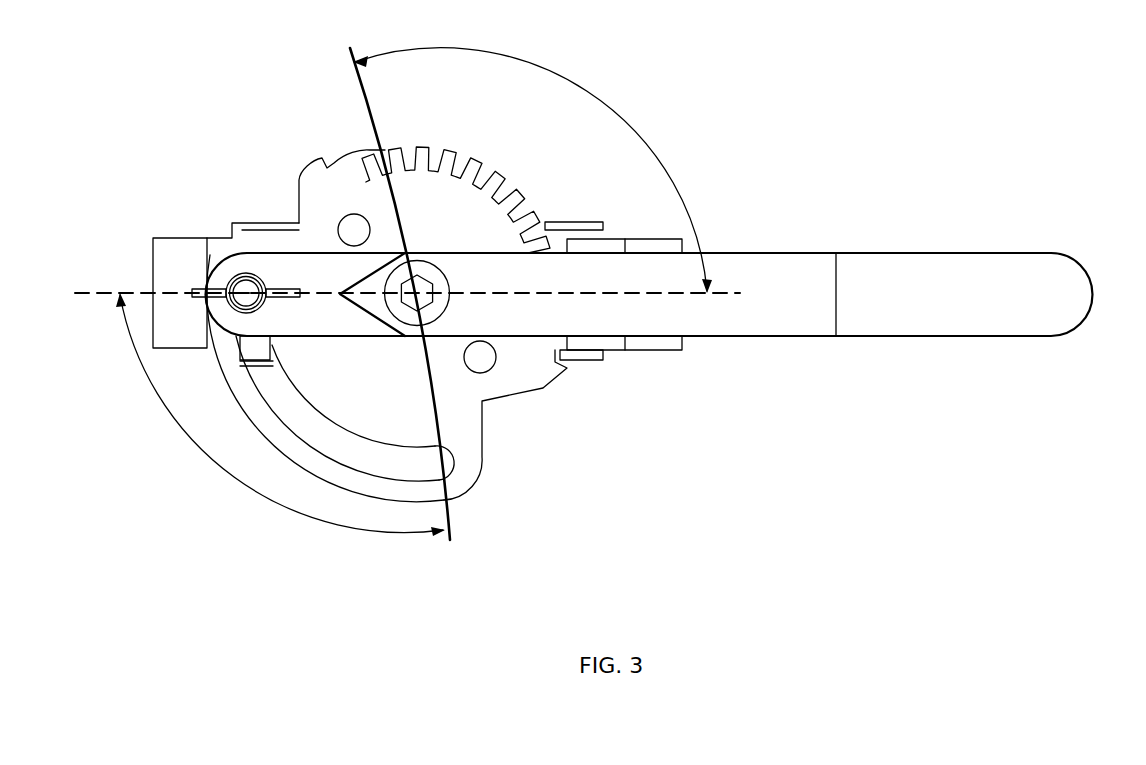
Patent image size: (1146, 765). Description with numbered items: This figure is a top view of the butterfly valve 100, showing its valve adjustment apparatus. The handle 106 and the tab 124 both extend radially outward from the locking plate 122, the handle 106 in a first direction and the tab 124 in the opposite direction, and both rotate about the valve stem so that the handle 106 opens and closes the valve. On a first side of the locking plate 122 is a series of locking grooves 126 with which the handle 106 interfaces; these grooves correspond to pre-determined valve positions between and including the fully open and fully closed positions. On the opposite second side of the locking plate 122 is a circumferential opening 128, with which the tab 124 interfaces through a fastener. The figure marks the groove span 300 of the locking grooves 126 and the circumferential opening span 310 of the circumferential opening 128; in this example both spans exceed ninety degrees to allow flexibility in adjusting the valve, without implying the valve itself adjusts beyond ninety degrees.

The butterfly valve 100 is at (170, 78).
The handle 106 is at (1062, 280).
The locking plate 122 is at (322, 185).
The tab 124 is at (283, 272).
The locking grooves 126 is at (530, 174).
The circumferential opening 128 is at (273, 404).
The groove span 300 is at (668, 178).
The circumferential opening span 310 is at (253, 488).